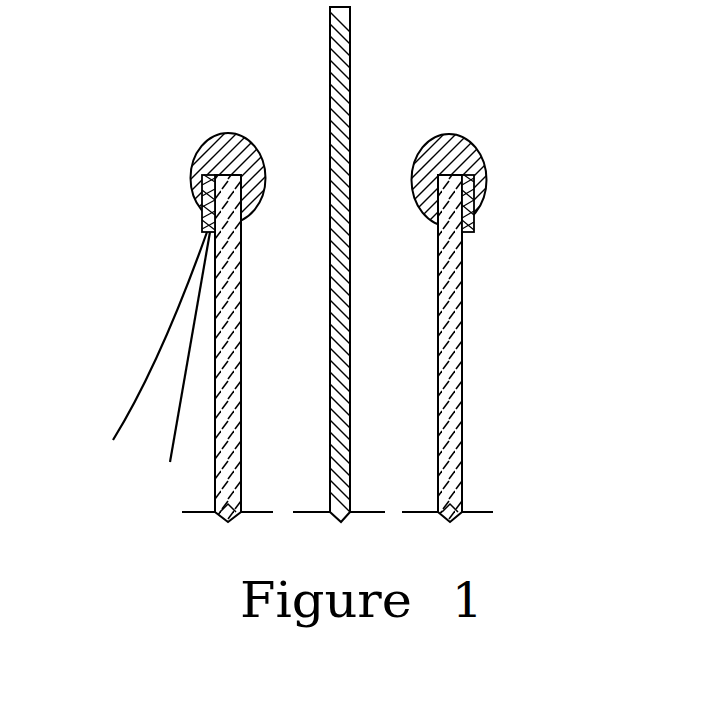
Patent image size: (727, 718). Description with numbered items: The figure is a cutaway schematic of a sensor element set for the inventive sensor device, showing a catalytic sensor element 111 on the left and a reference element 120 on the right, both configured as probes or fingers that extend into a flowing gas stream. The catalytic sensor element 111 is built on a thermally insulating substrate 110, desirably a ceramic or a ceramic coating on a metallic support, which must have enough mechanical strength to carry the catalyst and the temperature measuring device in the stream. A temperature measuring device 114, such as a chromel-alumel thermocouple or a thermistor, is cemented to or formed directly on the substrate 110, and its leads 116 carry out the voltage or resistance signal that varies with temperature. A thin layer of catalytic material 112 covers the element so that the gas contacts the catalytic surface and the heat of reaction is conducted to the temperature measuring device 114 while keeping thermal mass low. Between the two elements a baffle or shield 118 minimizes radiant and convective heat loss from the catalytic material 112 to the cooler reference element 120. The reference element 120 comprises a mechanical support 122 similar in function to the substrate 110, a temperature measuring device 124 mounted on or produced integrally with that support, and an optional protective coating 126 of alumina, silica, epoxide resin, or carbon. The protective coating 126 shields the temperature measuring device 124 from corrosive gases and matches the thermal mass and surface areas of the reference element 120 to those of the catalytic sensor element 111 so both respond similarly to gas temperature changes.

The substrate 110 is at (216, 463).
The catalytic sensor element 111 is at (168, 295).
The catalytic material 112 is at (223, 138).
The temperature measuring device 114 is at (202, 198).
The leads 116 is at (182, 390).
The baffle or shield 118 is at (350, 80).
The reference element 120 is at (529, 295).
The mechanical support 122 is at (463, 467).
The temperature measuring device 124 is at (478, 192).
The protective coating 126 is at (455, 134).